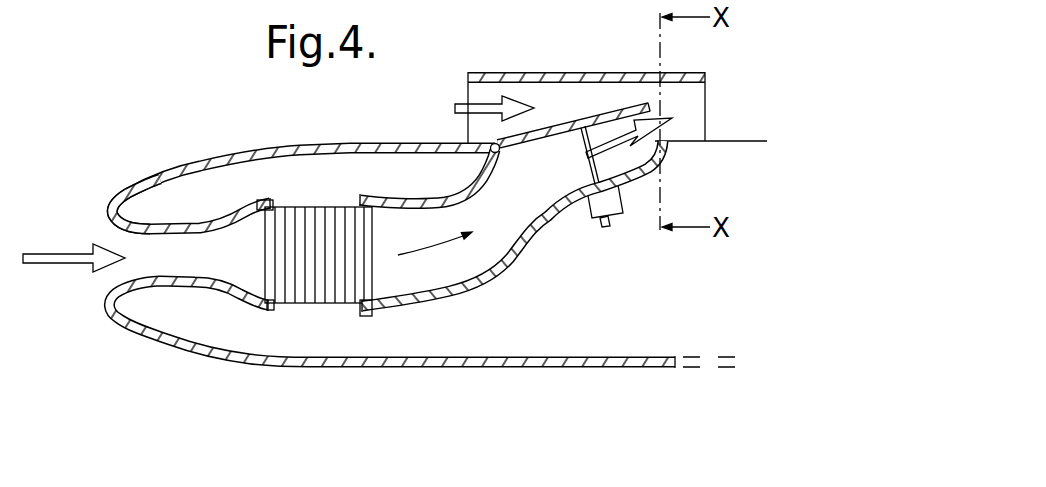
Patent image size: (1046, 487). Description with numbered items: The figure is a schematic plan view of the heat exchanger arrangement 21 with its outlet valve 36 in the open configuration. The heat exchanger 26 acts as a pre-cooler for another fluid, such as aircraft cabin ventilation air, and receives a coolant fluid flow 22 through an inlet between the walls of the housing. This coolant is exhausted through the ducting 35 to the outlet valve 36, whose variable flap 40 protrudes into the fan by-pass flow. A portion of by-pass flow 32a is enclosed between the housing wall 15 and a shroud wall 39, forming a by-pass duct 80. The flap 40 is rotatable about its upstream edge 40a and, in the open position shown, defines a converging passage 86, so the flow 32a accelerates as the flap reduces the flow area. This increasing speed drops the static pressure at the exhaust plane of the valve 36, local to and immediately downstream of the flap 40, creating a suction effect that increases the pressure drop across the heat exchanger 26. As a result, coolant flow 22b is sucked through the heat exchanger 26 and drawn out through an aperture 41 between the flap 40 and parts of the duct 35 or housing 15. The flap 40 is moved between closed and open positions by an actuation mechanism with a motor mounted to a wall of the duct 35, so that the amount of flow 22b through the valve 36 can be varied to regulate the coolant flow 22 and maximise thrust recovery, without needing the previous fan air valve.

The by-pass duct 80 is at (140, 90).
The heat exchanger arrangement 21 is at (256, 138).
The housing wall 15 is at (140, 179).
The coolant fluid flow 22 is at (67, 267).
The heat exchanger 26 is at (328, 293).
The coolant flow through the heat exchanger 22b is at (440, 248).
The upstream edge of the flap 40a is at (500, 157).
The ducting 35 is at (517, 265).
The outlet valve 36 is at (555, 195).
The converging passage 86 is at (549, 104).
The variable flap 40 is at (590, 117).
The shroud wall 39 is at (620, 72).
The aperture 41 is at (656, 115).
The portion of by-pass flow 32a is at (458, 100).